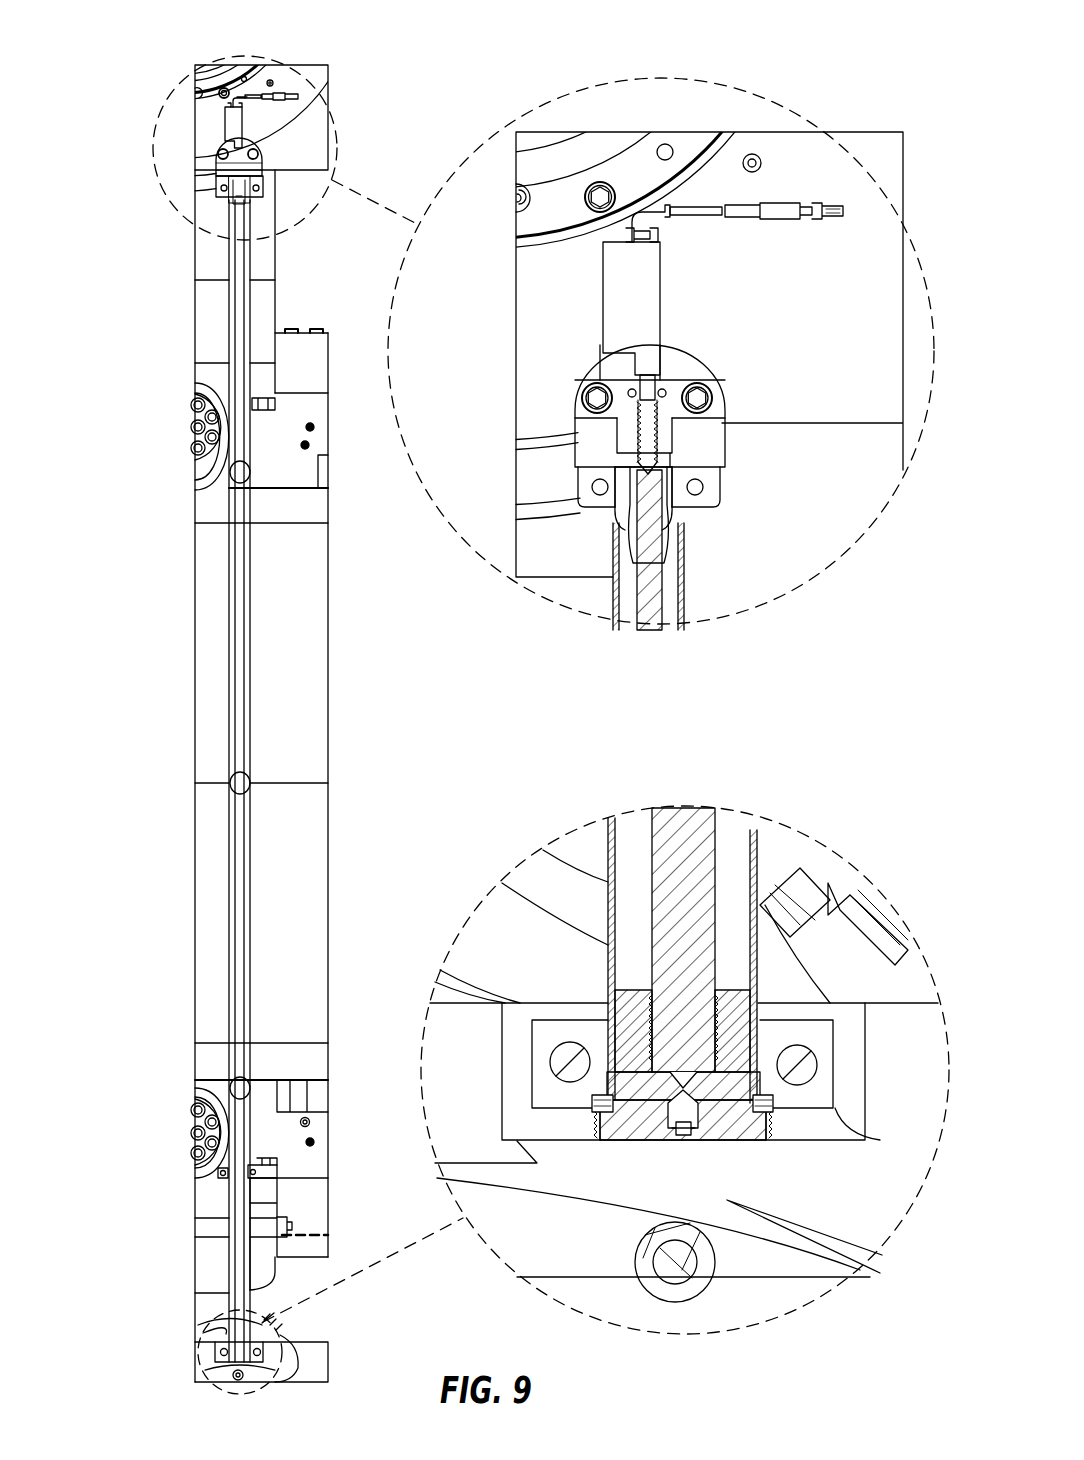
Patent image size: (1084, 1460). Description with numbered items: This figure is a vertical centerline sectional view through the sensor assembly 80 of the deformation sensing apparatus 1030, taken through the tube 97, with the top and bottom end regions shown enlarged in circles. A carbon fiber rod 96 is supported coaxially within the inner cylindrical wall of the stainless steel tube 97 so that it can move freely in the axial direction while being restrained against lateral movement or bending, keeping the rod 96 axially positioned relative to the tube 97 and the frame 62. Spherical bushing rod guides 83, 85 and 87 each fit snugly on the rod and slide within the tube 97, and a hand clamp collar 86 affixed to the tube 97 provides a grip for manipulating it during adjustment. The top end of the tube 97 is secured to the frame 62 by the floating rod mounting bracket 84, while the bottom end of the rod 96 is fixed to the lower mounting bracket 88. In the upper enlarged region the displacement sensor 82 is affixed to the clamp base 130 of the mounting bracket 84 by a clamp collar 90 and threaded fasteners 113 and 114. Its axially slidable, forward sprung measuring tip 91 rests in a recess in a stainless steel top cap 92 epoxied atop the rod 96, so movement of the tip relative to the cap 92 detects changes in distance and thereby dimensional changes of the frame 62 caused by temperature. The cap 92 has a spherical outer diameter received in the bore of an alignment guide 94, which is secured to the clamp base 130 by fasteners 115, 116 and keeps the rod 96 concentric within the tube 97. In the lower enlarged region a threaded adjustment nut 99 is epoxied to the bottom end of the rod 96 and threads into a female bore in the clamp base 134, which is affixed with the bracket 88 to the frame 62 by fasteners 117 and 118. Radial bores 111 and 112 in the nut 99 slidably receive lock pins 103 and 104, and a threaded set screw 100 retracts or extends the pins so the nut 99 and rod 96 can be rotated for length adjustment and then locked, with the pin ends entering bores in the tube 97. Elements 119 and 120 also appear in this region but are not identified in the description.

The deformation sensing apparatus 1030 is at (110, 232).
The frame 62 is at (318, 65).
The sensor assembly 80 is at (226, 893).
The physical displacement sensor 82 is at (248, 124).
The spherical bushing rod guide 83 is at (235, 480).
The floating rod mounting bracket 84 is at (274, 182).
The spherical bushing rod guide 85 is at (235, 790).
The hand clamp collar 86 is at (226, 1184).
The spherical bushing rod guide 87 is at (232, 1086).
The lower mounting bracket 88 is at (210, 1353).
The clamp collar 90 is at (698, 352).
The measuring tip 91 is at (690, 434).
The top cap 92 is at (688, 464).
The alignment guide 94 is at (684, 513).
The carbon fiber rod 96 is at (233, 602).
The tube 97 is at (230, 648).
The threaded adjustment nut 99 is at (650, 1142).
The threaded set screw 100 is at (683, 1136).
The lock pin 103 is at (618, 1140).
The lock pin 104 is at (723, 1100).
The radially extending cylindrical bore 111 is at (624, 1012).
The radially extending cylindrical bore 112 is at (770, 1030).
The threaded fastener 113 is at (592, 397).
The threaded fastener 114 is at (700, 400).
The fastener 115 is at (598, 496).
The right hole 116 is at (704, 488).
The fastener 117 is at (566, 1064).
The fastener 118 is at (800, 1067).
The adapter 119 is at (655, 987).
The threaded sleeve 120 is at (757, 1002).
The clamp base 130 is at (668, 360).
The clamp base 134 is at (830, 1126).